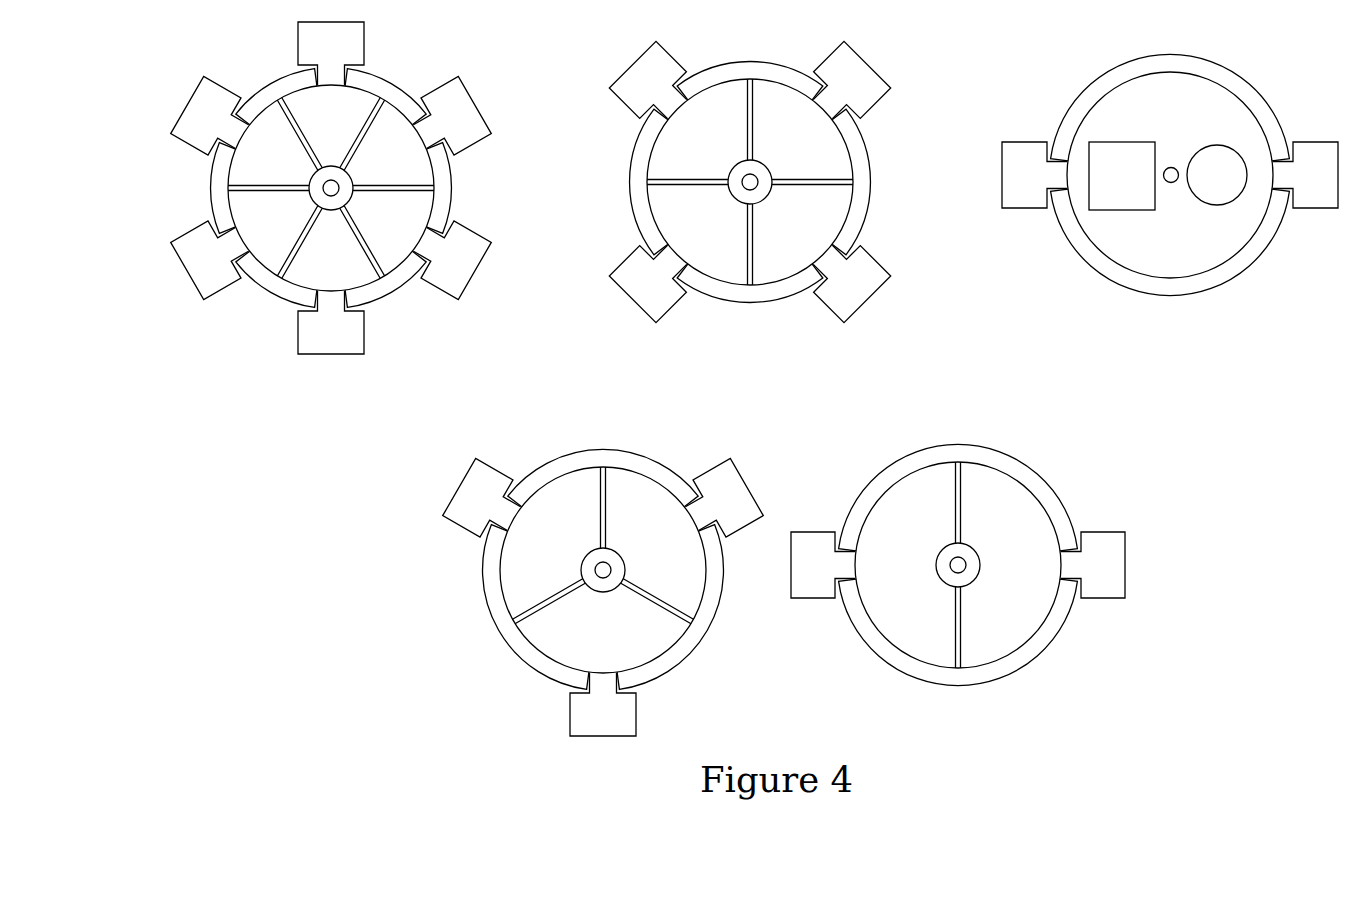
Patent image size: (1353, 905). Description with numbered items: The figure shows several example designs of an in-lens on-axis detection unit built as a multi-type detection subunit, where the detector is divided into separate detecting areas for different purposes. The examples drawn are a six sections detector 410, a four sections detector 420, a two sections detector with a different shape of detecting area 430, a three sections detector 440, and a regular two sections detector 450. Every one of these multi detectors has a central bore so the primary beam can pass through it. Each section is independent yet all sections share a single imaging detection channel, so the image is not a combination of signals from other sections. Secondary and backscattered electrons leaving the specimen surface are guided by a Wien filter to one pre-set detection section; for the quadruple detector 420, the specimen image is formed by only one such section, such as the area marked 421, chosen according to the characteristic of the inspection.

The six sections detector 410 is at (270, 297).
The four sections detector 420 is at (720, 202).
The wheel body sector 421 is at (680, 162).
The two sections detector with different shape of the detecting area 430 is at (1173, 295).
The three sections detector 440 is at (517, 643).
The regular two sections detector 450 is at (902, 663).